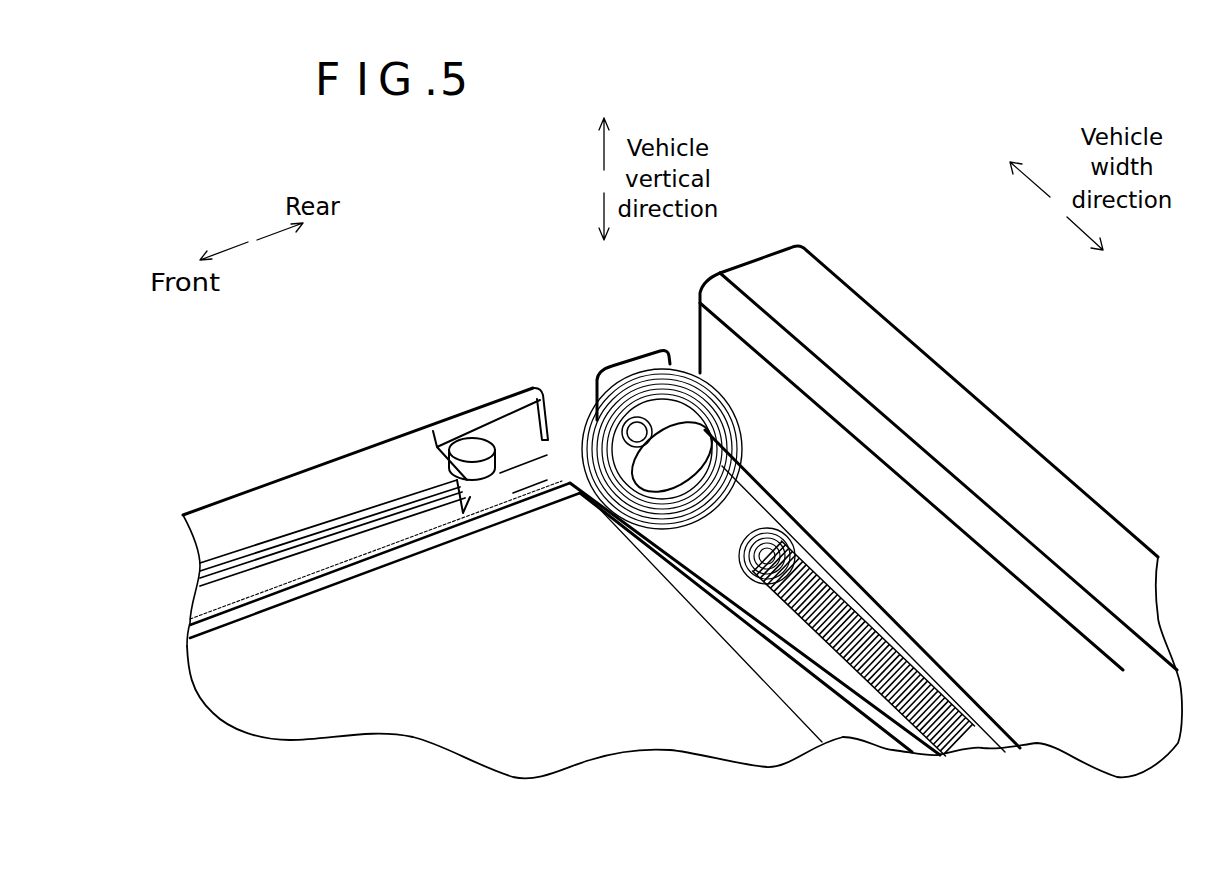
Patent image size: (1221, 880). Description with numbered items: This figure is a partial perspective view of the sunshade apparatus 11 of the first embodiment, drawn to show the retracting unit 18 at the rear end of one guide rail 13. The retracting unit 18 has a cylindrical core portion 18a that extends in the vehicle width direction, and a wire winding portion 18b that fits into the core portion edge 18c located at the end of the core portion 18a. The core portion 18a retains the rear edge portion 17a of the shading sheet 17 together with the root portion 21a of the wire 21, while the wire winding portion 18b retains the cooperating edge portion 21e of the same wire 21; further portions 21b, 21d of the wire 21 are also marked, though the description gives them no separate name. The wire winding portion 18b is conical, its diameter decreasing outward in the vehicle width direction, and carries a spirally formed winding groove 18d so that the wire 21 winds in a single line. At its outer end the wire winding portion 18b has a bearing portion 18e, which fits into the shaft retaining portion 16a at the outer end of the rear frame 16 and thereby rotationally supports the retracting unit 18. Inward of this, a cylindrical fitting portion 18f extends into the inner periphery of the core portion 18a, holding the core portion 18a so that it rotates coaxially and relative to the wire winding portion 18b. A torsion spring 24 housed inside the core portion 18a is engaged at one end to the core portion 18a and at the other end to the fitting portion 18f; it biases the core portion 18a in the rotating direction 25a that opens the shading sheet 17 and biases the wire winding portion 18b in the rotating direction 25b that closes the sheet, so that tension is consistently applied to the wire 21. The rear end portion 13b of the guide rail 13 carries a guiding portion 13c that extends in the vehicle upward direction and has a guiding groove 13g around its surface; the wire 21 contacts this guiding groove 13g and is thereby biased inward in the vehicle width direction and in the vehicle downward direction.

The sunshade apparatus 11 is at (489, 229).
The guide rail 13 is at (236, 483).
The rear end portion 13b is at (478, 378).
The guiding portion 13c is at (468, 444).
The guiding groove 13g is at (540, 388).
The rear frame 16 is at (972, 372).
The shaft retaining portion 16a is at (624, 364).
The shading sheet 17 is at (340, 693).
The rear edge portion 17a is at (735, 605).
The retracting unit 18 is at (875, 556).
The core portion 18a is at (913, 623).
The wire winding portion 18b is at (722, 380).
The core portion edge 18c is at (733, 393).
The winding groove 18d is at (740, 425).
The bearing portion 18e is at (660, 490).
The fitting portion 18f is at (723, 543).
The wire 21 is at (375, 573).
The root portion 21a is at (660, 517).
The lower portion of rod 21b is at (260, 608).
The bent portion of rod 21d is at (305, 548).
The cooperating edge portion 21e is at (688, 367).
The torsion spring 24 is at (893, 670).
The rotating direction 25a is at (571, 366).
The rotating direction 25b is at (665, 321).